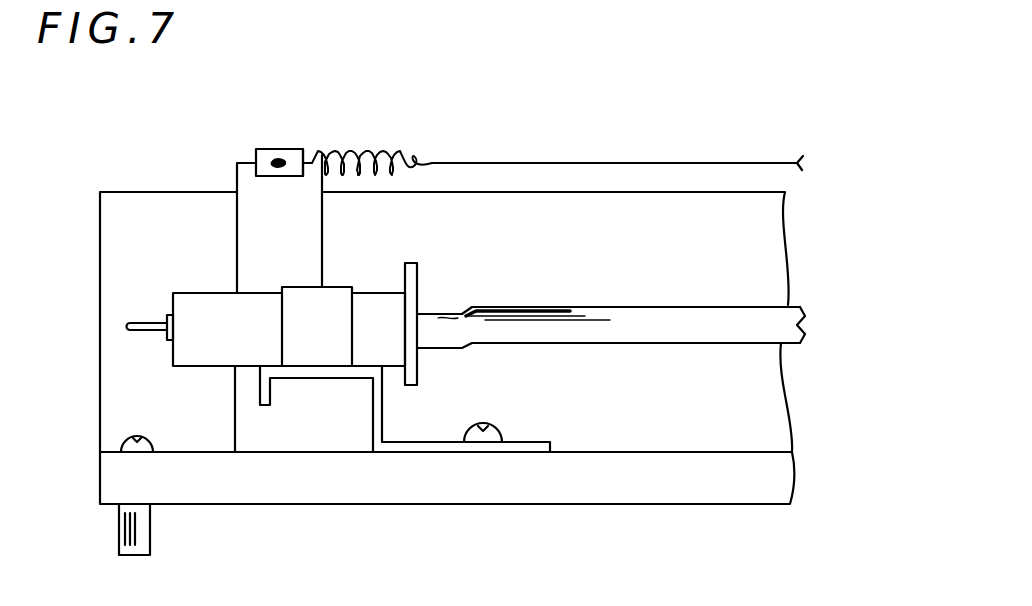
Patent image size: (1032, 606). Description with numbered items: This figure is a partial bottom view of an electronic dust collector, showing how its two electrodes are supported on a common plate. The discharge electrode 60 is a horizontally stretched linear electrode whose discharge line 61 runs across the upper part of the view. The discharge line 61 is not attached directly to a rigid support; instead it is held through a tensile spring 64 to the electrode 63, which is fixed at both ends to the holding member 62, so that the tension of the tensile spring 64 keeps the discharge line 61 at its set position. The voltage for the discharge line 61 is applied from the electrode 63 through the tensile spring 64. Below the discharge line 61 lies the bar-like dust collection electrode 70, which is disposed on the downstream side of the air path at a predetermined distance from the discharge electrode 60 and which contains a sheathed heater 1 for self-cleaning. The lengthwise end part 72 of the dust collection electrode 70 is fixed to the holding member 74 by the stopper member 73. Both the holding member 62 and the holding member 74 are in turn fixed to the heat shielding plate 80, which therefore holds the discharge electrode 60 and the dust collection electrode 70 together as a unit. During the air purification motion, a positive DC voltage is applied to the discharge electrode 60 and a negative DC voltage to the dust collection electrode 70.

The sheathed heater 1 is at (713, 341).
The discharge electrode 60 is at (529, 152).
The discharge line 61 is at (635, 161).
The holding member 62 is at (238, 178).
The electrode 63 is at (258, 148).
The tensile spring 64 is at (357, 152).
The dust collection electrode 70 is at (587, 365).
The lengthwise end part 72 is at (173, 367).
The stopper member 73 is at (338, 358).
The holding member 74 is at (427, 450).
The heat shielding plate 80 is at (642, 493).